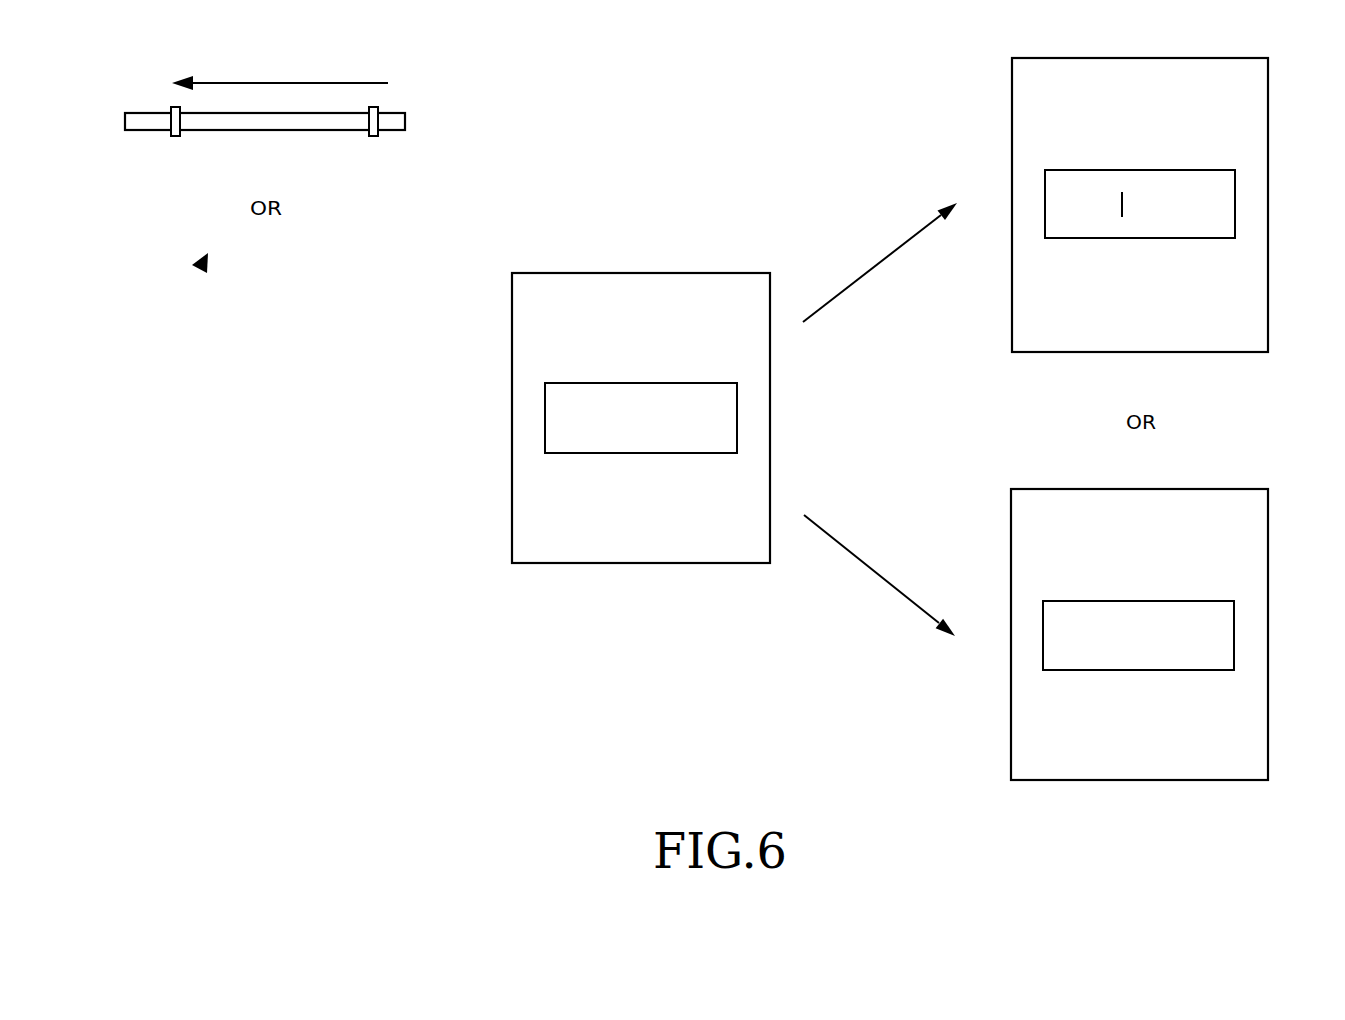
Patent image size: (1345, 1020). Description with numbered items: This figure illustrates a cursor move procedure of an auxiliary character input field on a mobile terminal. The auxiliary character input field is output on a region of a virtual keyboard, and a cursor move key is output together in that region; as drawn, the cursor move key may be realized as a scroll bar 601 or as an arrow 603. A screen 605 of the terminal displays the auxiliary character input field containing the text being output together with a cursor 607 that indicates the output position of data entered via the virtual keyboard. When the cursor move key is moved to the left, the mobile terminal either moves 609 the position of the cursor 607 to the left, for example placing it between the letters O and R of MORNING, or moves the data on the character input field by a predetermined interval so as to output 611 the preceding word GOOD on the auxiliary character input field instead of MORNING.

The scroll bar 601 is at (328, 131).
The arrow 603 is at (204, 272).
The electronic device display screen 605 is at (512, 292).
The cursor 607 is at (717, 418).
The cursor move 609 is at (1123, 208).
The data output 611 is at (1063, 656).